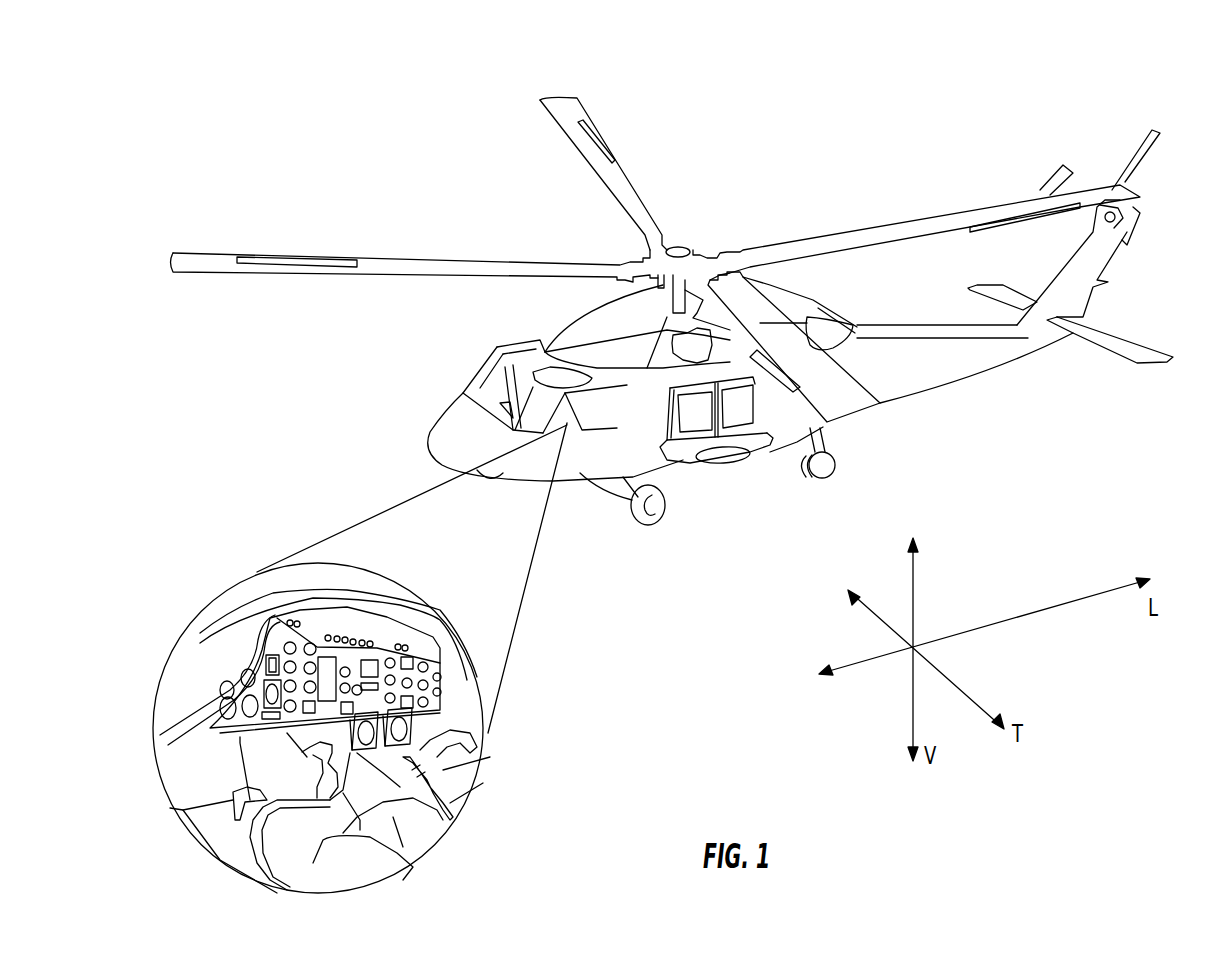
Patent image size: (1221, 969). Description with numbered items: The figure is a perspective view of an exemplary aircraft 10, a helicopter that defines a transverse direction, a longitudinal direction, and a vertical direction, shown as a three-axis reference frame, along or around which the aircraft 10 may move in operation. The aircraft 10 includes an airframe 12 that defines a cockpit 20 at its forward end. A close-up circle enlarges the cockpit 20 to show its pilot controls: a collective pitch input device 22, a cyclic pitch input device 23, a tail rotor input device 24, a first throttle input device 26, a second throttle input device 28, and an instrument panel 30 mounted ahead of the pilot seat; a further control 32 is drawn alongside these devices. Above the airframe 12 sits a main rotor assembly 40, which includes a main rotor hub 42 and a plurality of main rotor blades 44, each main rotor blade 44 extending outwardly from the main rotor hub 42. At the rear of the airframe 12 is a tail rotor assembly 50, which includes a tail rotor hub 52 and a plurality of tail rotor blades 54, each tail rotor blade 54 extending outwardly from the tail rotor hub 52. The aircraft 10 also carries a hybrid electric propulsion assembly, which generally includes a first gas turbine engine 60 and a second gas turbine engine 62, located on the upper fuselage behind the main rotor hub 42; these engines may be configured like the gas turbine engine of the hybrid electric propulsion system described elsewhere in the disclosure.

The aircraft 10 is at (412, 95).
The airframe 12 is at (457, 453).
The cockpit 20 is at (262, 566).
The collective pitch input device 22 is at (430, 817).
The cyclic pitch input device 23 is at (310, 760).
The tail rotor input device 24 is at (153, 837).
The first throttle input device 26 is at (403, 760).
The second throttle input device 28 is at (427, 720).
The instrument panel 30 is at (322, 646).
The control knob 32 is at (440, 768).
The main rotor assembly 40 is at (718, 225).
The main rotor hub 42 is at (677, 248).
The main rotor blades 44 is at (210, 258).
The tail rotor assembly 50 is at (1112, 150).
The tail rotor hub 52 is at (1115, 221).
The tail rotor blades 54 is at (1162, 133).
The first gas turbine engine 60 is at (803, 325).
The second gas turbine engine 62 is at (645, 293).